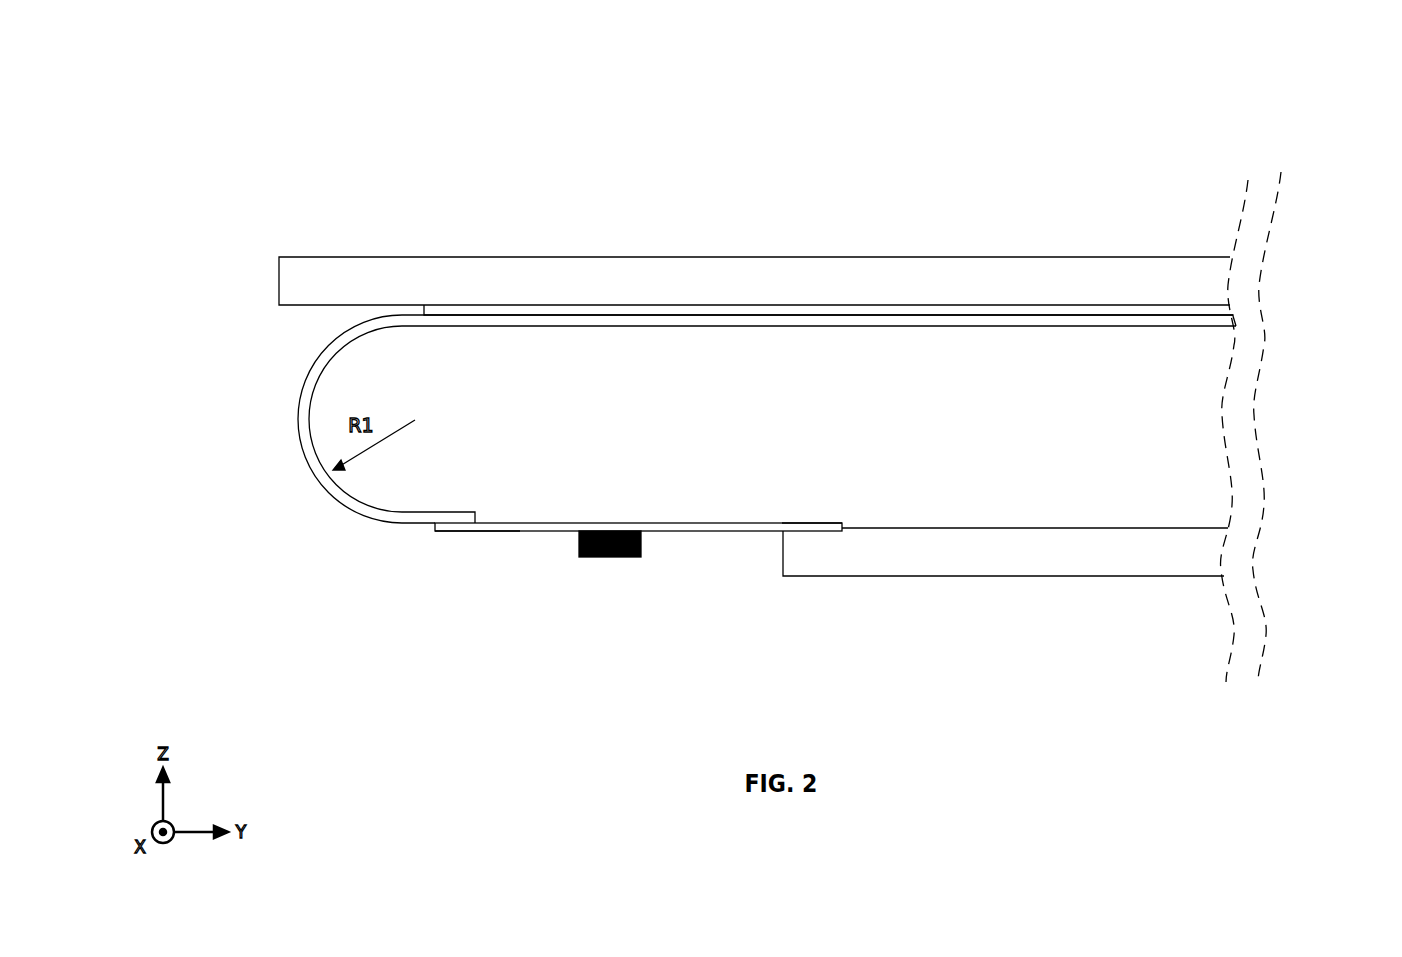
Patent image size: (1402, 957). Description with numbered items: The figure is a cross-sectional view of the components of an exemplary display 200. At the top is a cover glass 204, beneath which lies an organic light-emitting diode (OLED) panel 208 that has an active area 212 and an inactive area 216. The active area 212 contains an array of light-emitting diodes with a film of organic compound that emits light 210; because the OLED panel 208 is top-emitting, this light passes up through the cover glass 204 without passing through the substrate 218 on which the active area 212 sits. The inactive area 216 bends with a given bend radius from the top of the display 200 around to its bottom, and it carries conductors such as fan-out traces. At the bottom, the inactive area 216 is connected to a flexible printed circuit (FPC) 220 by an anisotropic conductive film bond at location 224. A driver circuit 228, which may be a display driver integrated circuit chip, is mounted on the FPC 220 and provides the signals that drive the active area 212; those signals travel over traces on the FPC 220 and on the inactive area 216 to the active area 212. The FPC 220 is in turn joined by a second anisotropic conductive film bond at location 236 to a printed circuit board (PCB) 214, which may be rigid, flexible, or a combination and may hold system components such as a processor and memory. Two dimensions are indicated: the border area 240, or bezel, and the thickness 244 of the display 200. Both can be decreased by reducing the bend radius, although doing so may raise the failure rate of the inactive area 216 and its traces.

The display 200 is at (1327, 131).
The cover glass 204 is at (960, 257).
The organic light-emitting diode (OLED) panel 208 is at (866, 334).
The light 210 is at (1123, 305).
The active area 212 is at (683, 310).
The printed circuit board (PCB) 214 is at (906, 576).
The inactive area 216 is at (300, 432).
The substrate 218 is at (1052, 323).
The flexible printed circuit (FPC) 220 is at (505, 531).
The ACF bond location 224 is at (450, 531).
The driver circuit 228 is at (620, 557).
The ACF bond location 236 is at (813, 523).
The border area 240 is at (284, 187).
The thickness 244 is at (188, 577).